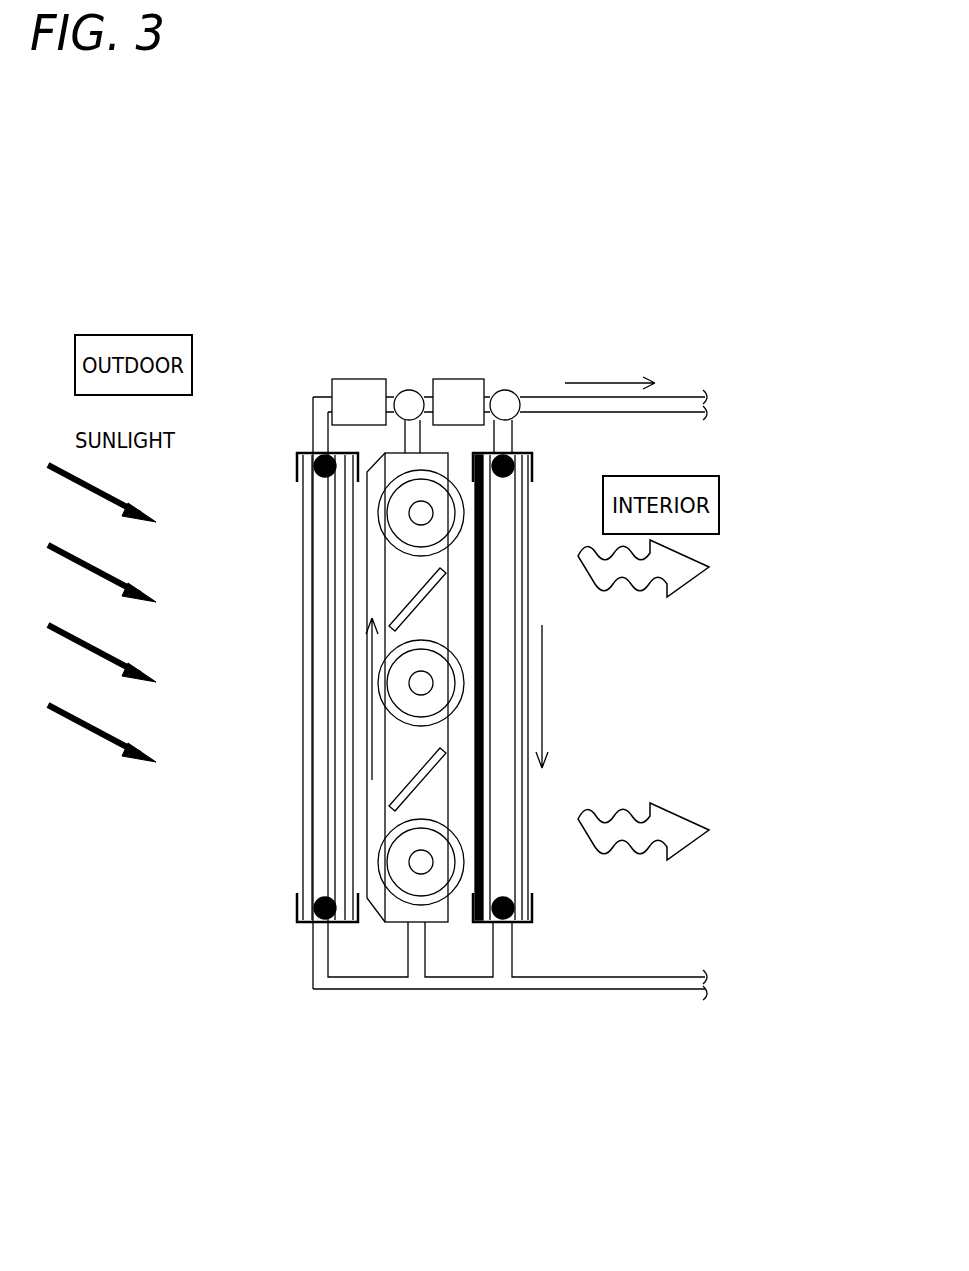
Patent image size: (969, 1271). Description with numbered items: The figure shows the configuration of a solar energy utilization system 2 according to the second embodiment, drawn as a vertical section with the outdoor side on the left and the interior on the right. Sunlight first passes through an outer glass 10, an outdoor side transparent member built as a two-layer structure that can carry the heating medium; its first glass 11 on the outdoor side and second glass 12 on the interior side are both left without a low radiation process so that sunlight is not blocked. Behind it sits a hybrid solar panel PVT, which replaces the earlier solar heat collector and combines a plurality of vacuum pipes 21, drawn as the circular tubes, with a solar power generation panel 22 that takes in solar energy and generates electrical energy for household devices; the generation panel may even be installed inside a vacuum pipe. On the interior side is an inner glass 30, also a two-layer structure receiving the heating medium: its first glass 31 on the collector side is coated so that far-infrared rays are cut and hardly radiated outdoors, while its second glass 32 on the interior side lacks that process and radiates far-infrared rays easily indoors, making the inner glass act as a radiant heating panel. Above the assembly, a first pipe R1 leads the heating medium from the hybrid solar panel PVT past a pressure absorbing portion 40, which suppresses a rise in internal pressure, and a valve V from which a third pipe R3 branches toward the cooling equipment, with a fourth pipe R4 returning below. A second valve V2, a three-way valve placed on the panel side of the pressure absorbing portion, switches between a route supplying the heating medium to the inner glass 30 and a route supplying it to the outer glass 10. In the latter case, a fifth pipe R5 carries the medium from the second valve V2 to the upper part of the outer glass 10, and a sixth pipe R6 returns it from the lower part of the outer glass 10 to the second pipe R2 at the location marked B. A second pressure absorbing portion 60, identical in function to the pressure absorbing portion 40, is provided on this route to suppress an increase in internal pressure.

The solar energy utilization system 2 is at (600, 316).
The outer glass 10 is at (263, 688).
The first glass 11 is at (303, 672).
The second glass 12 is at (345, 720).
The vacuum pipe 21 is at (455, 490).
The solar power generation panel 22 is at (388, 615).
The inner glass 30 is at (562, 687).
The first glass 31 is at (487, 772).
The second glass 32 is at (525, 605).
The pressure absorbing portion 40 is at (470, 395).
The second pressure absorbing portion 60 is at (355, 395).
The valve V is at (505, 405).
The second valve V2 is at (408, 402).
The hybrid solar panel PVT is at (362, 455).
The first pipe R1 is at (410, 437).
The second pipe R2 is at (418, 942).
The third pipe R3 is at (678, 400).
The fourth pipe R4 is at (665, 985).
The fifth pipe R5 is at (312, 444).
The sixth pipe R6 is at (313, 978).
The connection location B is at (415, 978).